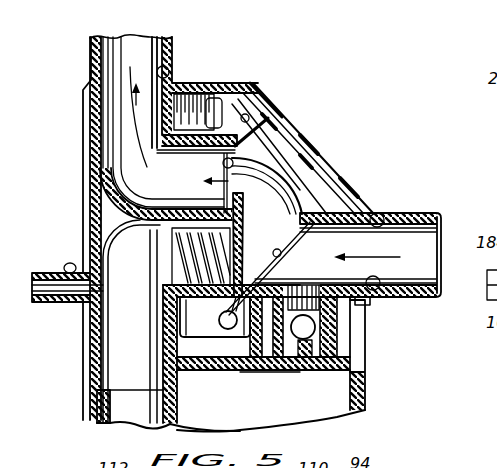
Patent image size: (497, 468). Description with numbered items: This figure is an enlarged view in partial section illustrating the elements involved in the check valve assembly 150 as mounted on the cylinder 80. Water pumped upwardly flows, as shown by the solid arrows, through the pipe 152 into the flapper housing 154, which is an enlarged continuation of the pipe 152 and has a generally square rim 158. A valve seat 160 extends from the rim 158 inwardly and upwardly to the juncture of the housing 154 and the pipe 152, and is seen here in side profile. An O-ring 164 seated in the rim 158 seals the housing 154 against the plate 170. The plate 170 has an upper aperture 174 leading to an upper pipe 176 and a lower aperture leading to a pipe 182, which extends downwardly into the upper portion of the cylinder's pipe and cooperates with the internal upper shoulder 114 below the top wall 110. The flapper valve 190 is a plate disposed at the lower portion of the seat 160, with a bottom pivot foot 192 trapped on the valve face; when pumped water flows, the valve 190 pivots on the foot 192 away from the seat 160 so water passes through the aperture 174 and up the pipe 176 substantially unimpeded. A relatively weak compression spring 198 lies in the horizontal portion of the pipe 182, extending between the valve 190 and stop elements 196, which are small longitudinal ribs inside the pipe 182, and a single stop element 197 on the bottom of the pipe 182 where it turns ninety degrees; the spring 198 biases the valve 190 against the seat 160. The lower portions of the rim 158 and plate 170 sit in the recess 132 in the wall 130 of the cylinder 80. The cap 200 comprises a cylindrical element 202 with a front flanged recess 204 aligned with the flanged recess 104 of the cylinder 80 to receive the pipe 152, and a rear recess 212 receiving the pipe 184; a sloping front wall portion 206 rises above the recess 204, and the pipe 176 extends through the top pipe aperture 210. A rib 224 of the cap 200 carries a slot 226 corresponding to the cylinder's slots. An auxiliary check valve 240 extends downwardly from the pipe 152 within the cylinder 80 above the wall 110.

The cylinder 80 is at (367, 392).
The flanged recess 104 is at (372, 290).
The top wall 110 is at (288, 372).
The internal upper shoulder 114 is at (137, 412).
The wall 130 is at (352, 345).
The recess 132 is at (232, 345).
The check valve assembly 150 is at (300, 150).
The pipe 152 is at (436, 212).
The flapper housing 154 is at (342, 195).
The rim 158 is at (254, 85).
The valve seat 160 is at (278, 257).
The O-ring 164 is at (232, 372).
The plate 170 is at (214, 90).
The upper aperture 174 is at (222, 163).
The upper pipe 176 is at (172, 42).
The pipe 182 is at (97, 373).
The pipe 184 is at (44, 276).
The flapper valve 190 is at (238, 205).
The bottom pivot foot 192 is at (226, 322).
The stop elements 196 is at (163, 252).
The stop element 197 is at (157, 288).
The compression spring 198 is at (187, 217).
The cap 200 is at (80, 132).
The cylindrical element 202 is at (88, 190).
The front flanged recess 204 is at (378, 212).
The sloping front wall portion 206 is at (330, 168).
The top pipe aperture 210 is at (170, 71).
The rear recess 212 is at (67, 262).
The rib 224 is at (290, 132).
The slot 226 is at (272, 112).
The auxiliary check valve 240 is at (350, 325).